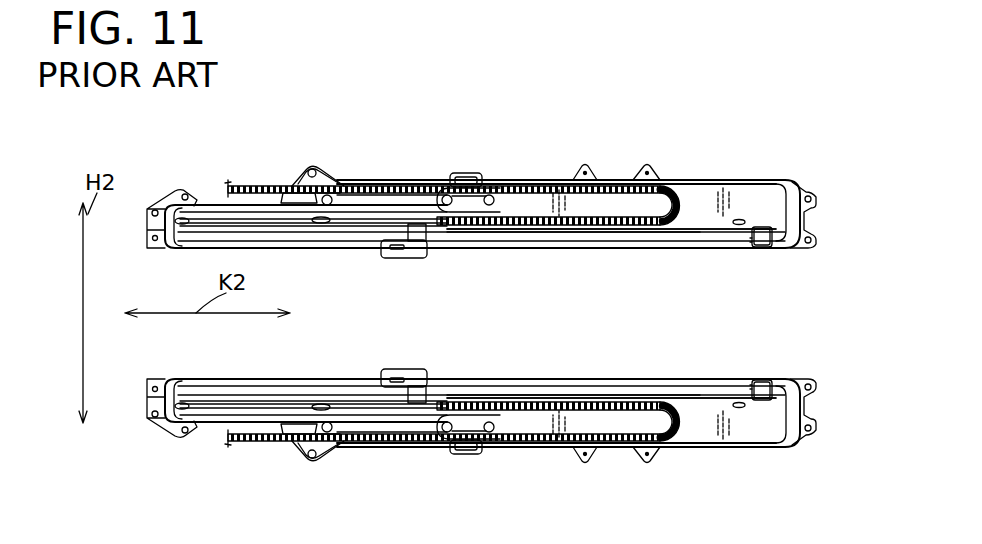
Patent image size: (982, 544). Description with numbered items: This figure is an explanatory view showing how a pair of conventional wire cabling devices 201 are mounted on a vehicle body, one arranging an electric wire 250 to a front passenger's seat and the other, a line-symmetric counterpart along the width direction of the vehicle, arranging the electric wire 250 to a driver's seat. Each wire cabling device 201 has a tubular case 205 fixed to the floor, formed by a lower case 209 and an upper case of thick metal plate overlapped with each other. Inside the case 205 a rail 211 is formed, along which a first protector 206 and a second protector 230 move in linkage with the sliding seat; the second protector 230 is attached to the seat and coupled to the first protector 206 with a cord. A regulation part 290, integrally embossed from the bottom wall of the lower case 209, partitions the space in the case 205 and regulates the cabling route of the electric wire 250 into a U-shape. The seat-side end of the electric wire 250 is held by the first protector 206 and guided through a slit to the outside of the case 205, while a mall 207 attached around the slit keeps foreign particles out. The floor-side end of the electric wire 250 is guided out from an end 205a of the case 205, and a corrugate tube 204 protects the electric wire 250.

The wire cabling device 201 is at (305, 163).
The corrugate tube 204 is at (514, 180).
The case 205 is at (762, 313).
The end of the case 205a is at (286, 174).
The first protector 206 is at (421, 259).
The mall 207 is at (672, 248).
The lower case 209 is at (727, 210).
The rail 211 is at (698, 232).
The second protector 230 is at (383, 259).
The electric wire 250 is at (558, 313).
The regulation part 290 is at (382, 203).